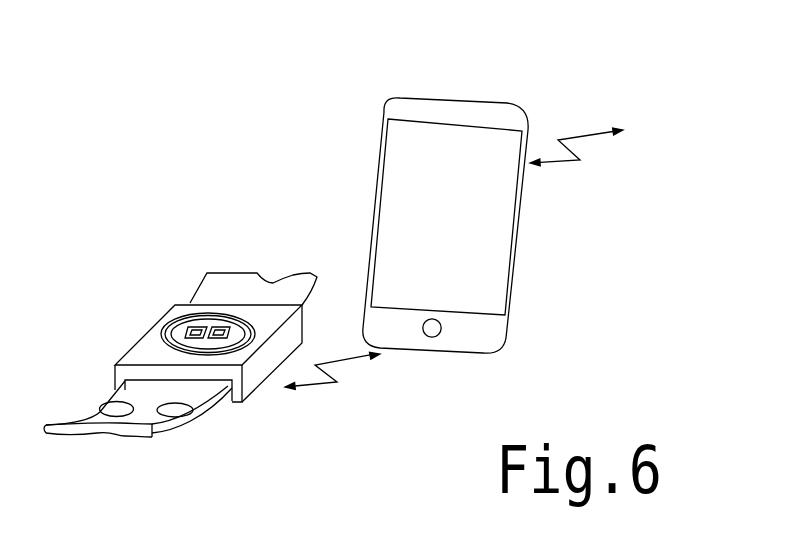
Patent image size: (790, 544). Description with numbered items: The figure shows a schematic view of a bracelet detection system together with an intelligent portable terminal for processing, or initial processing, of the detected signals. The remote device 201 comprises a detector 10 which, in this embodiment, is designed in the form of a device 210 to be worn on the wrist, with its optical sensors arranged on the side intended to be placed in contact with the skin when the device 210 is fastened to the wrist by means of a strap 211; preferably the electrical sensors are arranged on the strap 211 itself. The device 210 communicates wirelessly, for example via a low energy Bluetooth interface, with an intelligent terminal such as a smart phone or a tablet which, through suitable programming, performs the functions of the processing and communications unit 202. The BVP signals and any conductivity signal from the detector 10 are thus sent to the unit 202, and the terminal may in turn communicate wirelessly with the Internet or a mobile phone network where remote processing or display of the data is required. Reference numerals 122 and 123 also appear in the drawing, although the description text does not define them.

The remote device 201 is at (181, 90).
The data processing and transmission unit 202 is at (531, 276).
The detector 10 is at (196, 333).
The device to be worn on the wrist 210 is at (256, 442).
The strap 211 is at (178, 410).
The hole 122 is at (107, 405).
The hole 123 is at (193, 398).